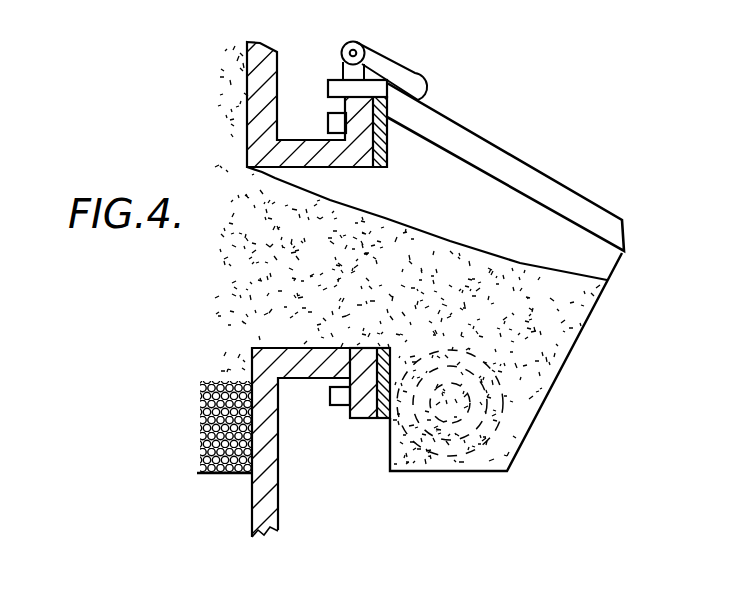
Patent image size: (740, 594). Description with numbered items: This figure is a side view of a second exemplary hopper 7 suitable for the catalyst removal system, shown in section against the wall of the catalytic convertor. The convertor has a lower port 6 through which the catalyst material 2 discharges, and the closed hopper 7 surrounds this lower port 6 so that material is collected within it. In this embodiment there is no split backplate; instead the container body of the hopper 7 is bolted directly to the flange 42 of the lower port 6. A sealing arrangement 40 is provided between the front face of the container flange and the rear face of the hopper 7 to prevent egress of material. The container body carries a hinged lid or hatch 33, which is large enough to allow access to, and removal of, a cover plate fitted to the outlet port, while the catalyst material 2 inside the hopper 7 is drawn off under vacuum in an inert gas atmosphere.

The catalyst material 2 is at (500, 320).
The lower port 6 is at (296, 140).
The closed hopper 7 is at (583, 369).
The hinged lid or hatch 33 is at (484, 136).
The sealing arrangement 40 is at (382, 422).
The flange 42 is at (358, 428).